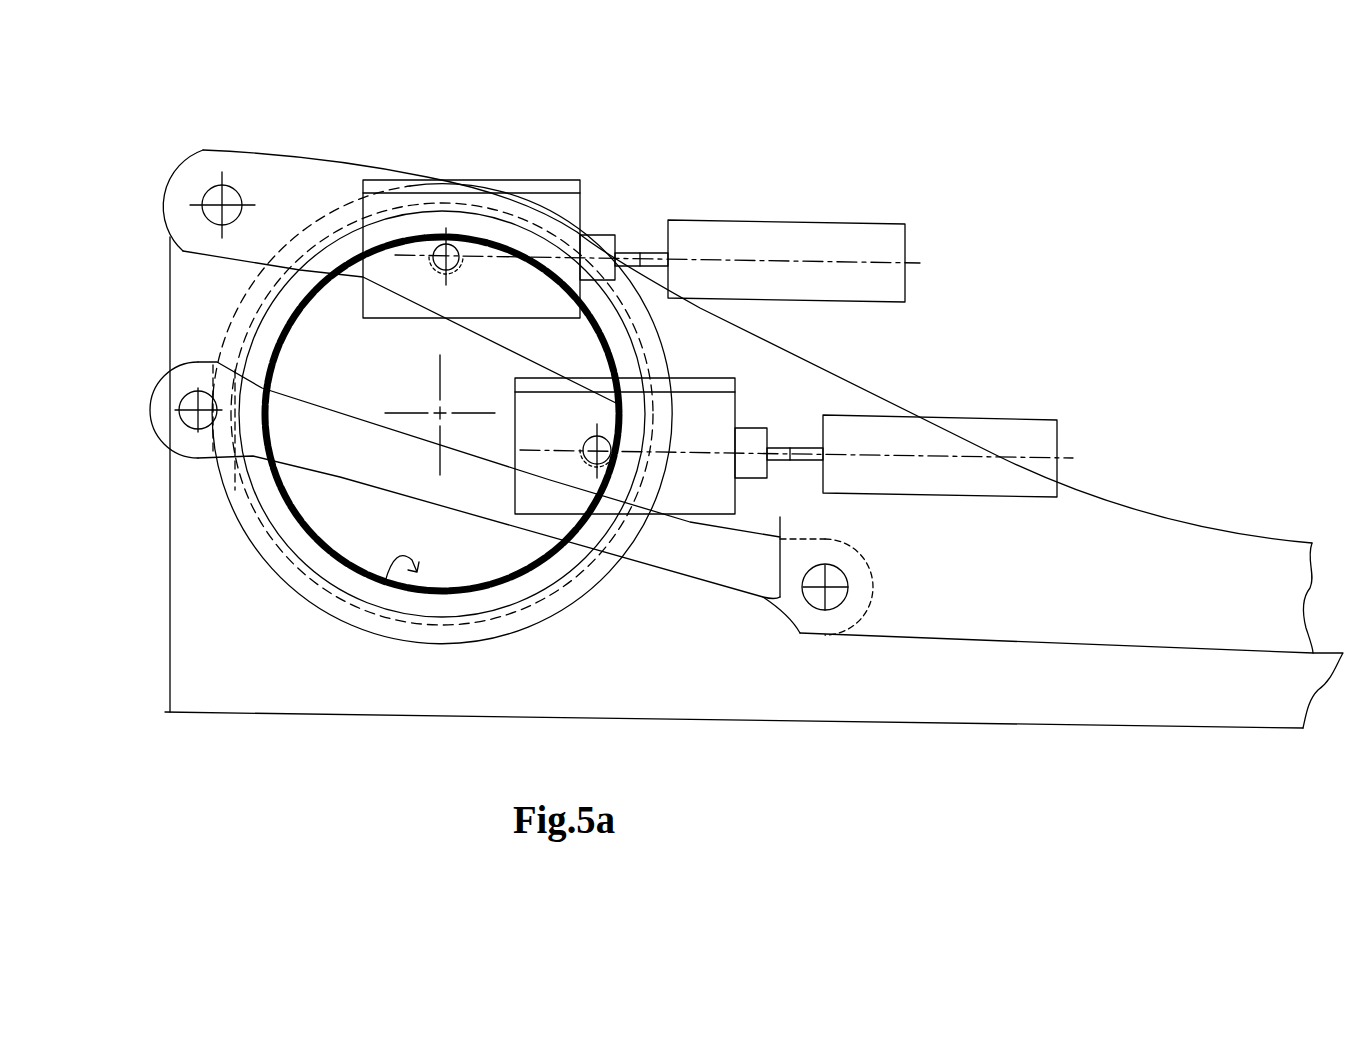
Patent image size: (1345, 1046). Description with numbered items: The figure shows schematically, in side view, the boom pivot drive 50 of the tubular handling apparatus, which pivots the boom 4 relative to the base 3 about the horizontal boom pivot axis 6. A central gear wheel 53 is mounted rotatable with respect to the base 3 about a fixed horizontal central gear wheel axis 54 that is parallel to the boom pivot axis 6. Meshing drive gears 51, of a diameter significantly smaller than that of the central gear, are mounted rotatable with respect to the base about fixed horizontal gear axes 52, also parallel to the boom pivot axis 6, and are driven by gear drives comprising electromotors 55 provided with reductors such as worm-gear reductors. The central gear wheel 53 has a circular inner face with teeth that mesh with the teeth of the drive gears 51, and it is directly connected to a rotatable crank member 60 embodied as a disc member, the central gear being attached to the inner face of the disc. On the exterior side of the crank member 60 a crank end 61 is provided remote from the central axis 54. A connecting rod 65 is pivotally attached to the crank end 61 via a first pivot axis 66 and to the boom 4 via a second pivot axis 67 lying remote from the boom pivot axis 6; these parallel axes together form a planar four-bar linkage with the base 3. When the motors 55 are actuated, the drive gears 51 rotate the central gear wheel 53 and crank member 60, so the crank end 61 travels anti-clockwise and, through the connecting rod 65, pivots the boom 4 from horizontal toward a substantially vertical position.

The base 3 is at (1090, 705).
The boom 4 is at (1146, 594).
The horizontal boom pivot axis 6 is at (229, 200).
The boom pivot drive 50 is at (665, 143).
The drive gear 51 is at (482, 268).
The gear axis 52 is at (438, 240).
The central gear wheel 53 is at (380, 578).
The central gear wheel axis 54 is at (438, 410).
The electromotor 55 is at (800, 238).
The crank member 60 is at (523, 592).
The crank end 61 is at (210, 354).
The connecting rod 65 is at (355, 457).
The first pivot axis 66 is at (190, 422).
The second pivot axis 67 is at (818, 597).